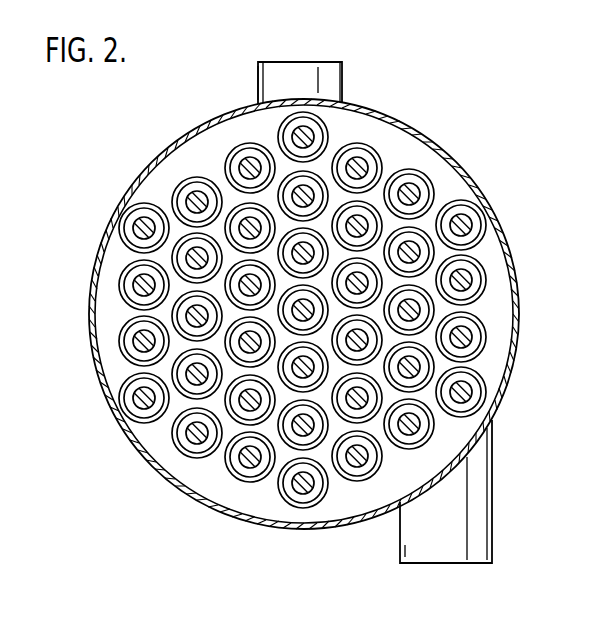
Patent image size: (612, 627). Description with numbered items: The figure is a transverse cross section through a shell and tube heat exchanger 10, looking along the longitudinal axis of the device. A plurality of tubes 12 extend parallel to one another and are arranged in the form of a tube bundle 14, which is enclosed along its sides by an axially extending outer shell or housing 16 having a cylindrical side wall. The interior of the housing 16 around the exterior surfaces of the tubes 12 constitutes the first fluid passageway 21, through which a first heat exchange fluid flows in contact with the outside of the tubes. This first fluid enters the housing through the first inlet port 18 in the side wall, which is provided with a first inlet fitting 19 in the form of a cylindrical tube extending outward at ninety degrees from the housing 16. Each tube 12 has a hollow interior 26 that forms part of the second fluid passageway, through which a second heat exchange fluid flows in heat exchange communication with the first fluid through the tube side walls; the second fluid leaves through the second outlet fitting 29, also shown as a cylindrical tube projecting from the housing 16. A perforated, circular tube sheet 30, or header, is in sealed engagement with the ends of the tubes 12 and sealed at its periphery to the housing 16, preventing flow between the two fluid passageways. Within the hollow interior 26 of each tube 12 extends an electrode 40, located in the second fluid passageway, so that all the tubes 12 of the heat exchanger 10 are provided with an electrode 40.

The heat exchanger 10 is at (130, 178).
The tubes 12 is at (455, 198).
The tube bundle 14 is at (490, 299).
The housing 16 is at (440, 148).
The first inlet port 18 is at (310, 62).
The first inlet fitting 19 is at (257, 83).
The first fluid passageway 21 is at (368, 126).
The hollow interiors 26 is at (473, 230).
The second outlet fitting 29 is at (493, 503).
The tube sheet 30 is at (203, 480).
The electrode 40 is at (357, 468).